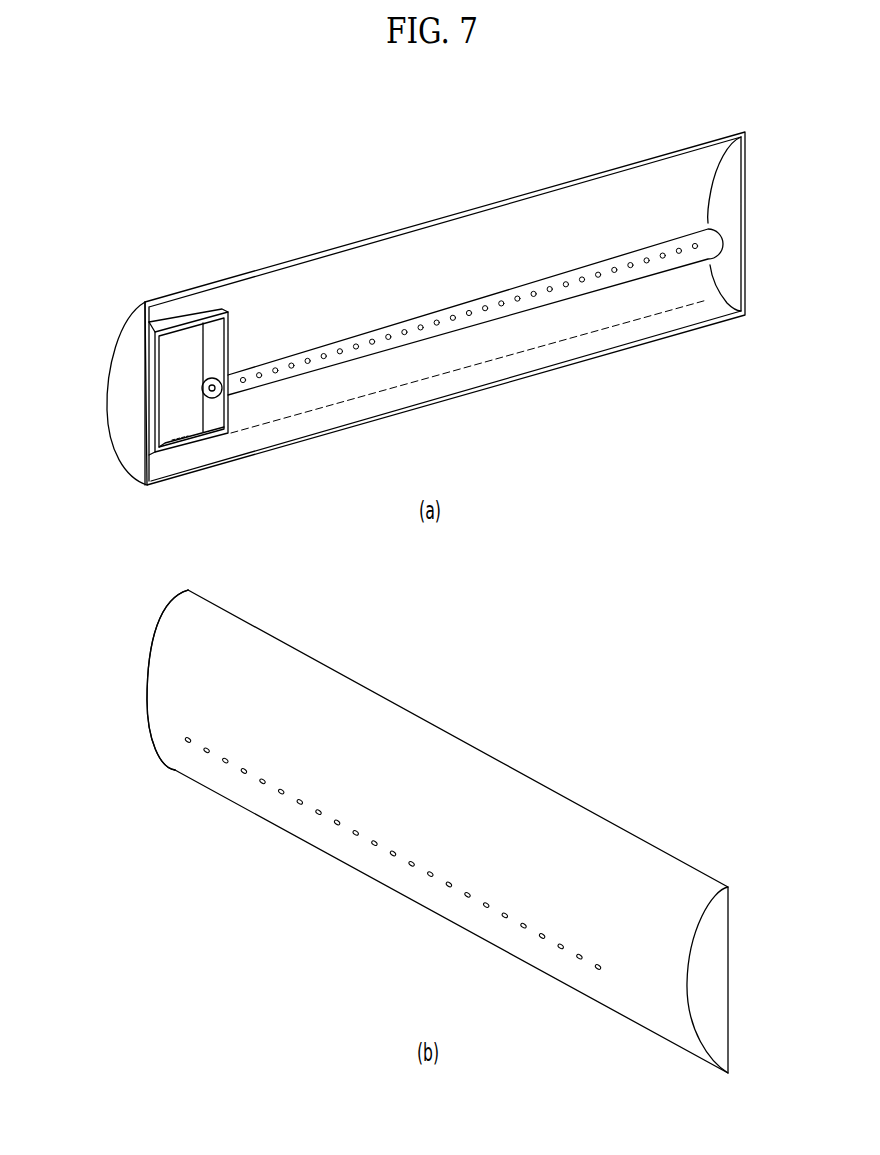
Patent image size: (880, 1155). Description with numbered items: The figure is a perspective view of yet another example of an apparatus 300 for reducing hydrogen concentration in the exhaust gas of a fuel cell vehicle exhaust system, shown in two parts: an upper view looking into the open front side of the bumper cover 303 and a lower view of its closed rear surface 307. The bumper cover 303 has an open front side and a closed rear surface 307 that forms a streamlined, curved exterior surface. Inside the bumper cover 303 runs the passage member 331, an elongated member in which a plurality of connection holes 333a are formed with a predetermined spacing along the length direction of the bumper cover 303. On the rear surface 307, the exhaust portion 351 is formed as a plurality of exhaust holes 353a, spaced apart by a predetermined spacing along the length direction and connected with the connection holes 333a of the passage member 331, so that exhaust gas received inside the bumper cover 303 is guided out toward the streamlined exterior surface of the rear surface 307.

The apparatus for reducing hydrogen concentration 300 is at (380, 115).
The bumper cover 303 is at (753, 208).
The rear surface 307 is at (163, 718).
The passage member 331 is at (613, 248).
The connection holes 333a is at (405, 329).
The exhaust portion 351 is at (373, 849).
The exhaust holes 353a is at (467, 897).